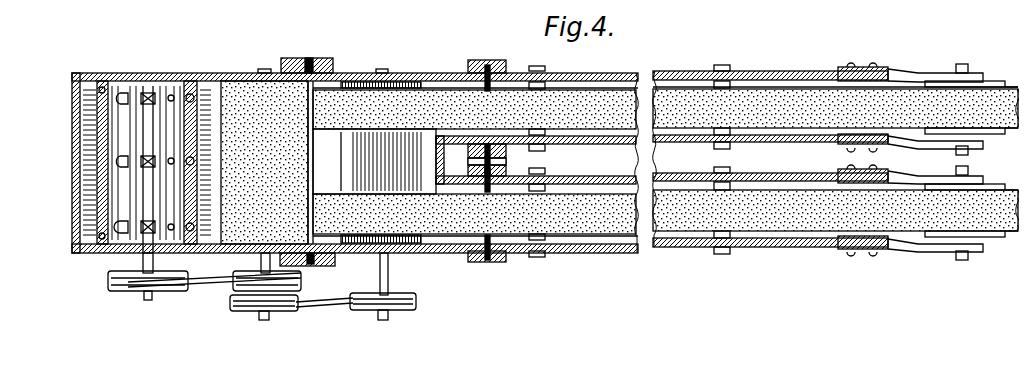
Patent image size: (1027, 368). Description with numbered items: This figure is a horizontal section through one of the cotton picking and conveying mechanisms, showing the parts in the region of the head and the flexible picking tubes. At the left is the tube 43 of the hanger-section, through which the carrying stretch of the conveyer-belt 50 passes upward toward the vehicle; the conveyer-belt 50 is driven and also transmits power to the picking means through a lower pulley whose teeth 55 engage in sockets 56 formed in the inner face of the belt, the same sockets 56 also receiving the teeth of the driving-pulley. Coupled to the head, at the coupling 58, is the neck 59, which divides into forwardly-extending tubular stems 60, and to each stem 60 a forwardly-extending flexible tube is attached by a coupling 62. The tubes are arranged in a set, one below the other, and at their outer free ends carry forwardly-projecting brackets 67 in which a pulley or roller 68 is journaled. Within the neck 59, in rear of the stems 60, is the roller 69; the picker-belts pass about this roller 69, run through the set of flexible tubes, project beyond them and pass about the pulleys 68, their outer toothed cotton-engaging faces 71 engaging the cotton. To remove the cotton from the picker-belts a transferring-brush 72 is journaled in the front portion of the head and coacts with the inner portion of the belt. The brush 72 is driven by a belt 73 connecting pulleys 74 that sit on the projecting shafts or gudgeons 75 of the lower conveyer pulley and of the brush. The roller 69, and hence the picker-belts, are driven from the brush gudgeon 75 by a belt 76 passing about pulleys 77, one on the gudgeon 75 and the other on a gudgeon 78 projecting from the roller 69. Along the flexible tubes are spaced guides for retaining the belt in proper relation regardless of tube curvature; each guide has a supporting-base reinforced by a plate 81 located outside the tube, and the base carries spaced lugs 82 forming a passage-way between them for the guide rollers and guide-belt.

The tube of the hanger-section 43 is at (90, 148).
The conveyer-belt 50 is at (88, 108).
The teeth 55 is at (138, 88).
The sockets 56 is at (92, 85).
The coupling 58 is at (300, 50).
The neck 59 is at (401, 67).
The tubular stems 60 is at (462, 60).
The couplings 62 is at (481, 57).
The brackets 67 is at (893, 59).
The pulley or roller 68 is at (983, 73).
The roller 69 is at (348, 165).
The toothed cotton-engaging faces 71 is at (1003, 122).
The transferring-brush 72 is at (238, 92).
The belt 73 is at (198, 281).
The pulleys 74 is at (106, 281).
The shafts or gudgeons 75 is at (140, 290).
The belt 76 is at (302, 293).
The pulleys 77 is at (242, 302).
The gudgeon 78 is at (380, 268).
The plate 81 is at (538, 63).
The lugs 82 is at (528, 166).